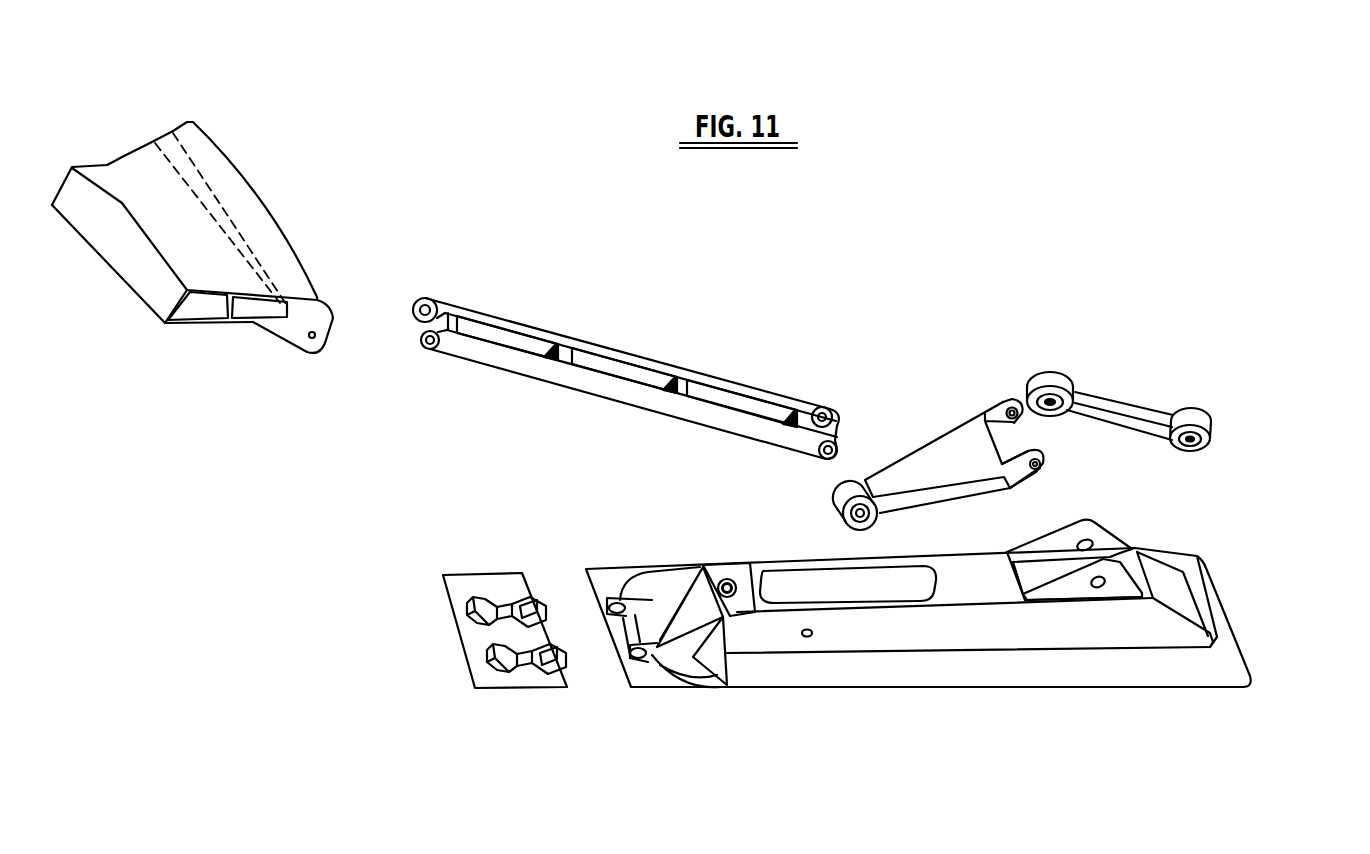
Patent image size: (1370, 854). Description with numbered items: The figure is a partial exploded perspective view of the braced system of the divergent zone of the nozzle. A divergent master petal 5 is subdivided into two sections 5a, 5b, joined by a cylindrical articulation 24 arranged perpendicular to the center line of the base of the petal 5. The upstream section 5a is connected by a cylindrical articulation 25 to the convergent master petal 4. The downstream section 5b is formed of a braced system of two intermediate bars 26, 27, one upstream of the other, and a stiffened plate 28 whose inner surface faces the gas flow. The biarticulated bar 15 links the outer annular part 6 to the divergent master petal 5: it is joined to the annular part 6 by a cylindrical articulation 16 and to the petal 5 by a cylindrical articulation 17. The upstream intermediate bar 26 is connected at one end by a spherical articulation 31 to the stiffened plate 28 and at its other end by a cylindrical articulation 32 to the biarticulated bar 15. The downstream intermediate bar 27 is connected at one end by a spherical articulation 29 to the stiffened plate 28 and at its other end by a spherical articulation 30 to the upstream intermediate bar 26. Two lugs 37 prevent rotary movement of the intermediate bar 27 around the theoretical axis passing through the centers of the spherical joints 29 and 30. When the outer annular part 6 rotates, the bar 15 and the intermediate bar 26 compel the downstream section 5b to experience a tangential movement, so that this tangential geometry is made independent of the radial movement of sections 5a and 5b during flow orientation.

The convergent master petal 4 is at (487, 662).
The divergent master petal 5 is at (918, 693).
The upstream section of divergent master petal 5a is at (650, 677).
The downstream section of divergent master petal 5b is at (1083, 630).
The outer annular part 6 is at (267, 200).
The biarticulated bar 15 is at (618, 367).
The cylindrical articulation 16 is at (425, 348).
The cylindrical articulation 17 is at (822, 412).
The cylindrical articulation 24 is at (730, 583).
The cylindrical articulation 25 is at (545, 650).
The upstream intermediate bar 26 is at (943, 457).
The downstream intermediate bar 27 is at (1130, 420).
The stiffened plate 28 is at (1023, 632).
The spherical articulation 29 is at (1110, 533).
The spherical articulation 30 is at (1050, 400).
The spherical articulation 31 is at (785, 580).
The cylindrical articulation 32 is at (1012, 412).
The lugs 37 is at (1133, 585).